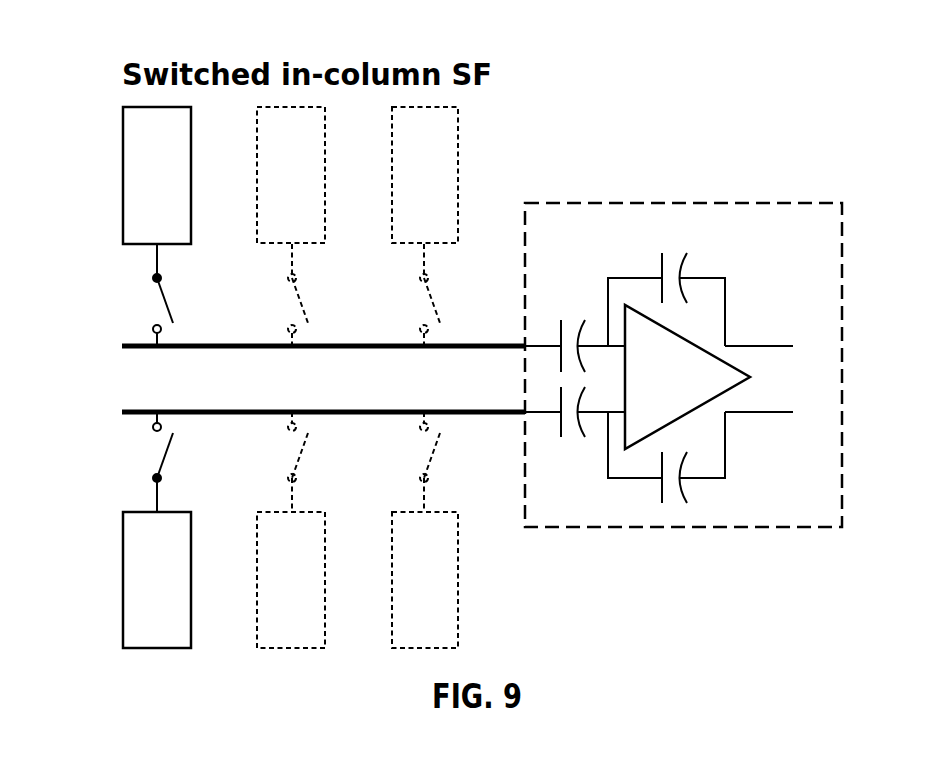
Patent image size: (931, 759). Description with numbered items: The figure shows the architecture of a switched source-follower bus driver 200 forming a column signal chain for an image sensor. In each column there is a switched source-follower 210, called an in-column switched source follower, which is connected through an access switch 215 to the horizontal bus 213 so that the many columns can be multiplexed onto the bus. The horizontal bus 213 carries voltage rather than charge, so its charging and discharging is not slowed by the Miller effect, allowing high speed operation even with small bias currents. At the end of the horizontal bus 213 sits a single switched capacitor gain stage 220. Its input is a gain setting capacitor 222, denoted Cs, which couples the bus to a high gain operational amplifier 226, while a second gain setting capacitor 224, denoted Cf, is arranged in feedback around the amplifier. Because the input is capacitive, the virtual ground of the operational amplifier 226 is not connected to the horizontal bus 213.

The switched source-follower bus driver 200 is at (99, 106).
The switched source-follower 210 is at (123, 205).
The horizontal bus 213 is at (350, 346).
The access switch 215 is at (168, 305).
The switched capacitor gain stage 220 is at (675, 530).
The gain setting capacitor Cs 222 is at (560, 336).
The gain setting capacitor Cf 224 is at (662, 266).
The high gain operational amplifier 226 is at (685, 340).